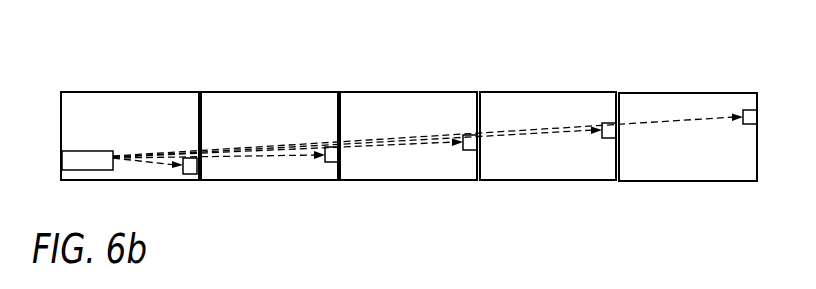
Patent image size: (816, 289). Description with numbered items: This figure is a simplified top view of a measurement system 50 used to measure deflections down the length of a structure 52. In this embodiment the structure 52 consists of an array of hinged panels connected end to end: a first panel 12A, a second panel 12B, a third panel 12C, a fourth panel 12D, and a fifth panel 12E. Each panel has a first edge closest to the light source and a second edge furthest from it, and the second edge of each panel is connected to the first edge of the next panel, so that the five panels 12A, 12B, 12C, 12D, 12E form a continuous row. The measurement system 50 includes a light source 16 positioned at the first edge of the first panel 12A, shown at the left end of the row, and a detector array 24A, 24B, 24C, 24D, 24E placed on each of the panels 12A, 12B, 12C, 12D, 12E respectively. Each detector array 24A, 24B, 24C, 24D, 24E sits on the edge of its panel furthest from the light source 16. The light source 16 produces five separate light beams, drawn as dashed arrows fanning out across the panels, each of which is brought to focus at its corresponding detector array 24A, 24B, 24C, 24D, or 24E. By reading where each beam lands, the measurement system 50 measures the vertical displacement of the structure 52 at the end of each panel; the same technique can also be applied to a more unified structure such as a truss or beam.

The first panel 12A is at (130, 92).
The second panel 12B is at (270, 92).
The third panel 12C is at (431, 92).
The fourth panel 12D is at (561, 92).
The fifth panel 12E is at (703, 93).
The light source 16 is at (62, 162).
The detector array 24A is at (192, 175).
The detector array 24B is at (328, 163).
The detector array 24C is at (471, 151).
The detector array 24D is at (608, 139).
The detector array 24E is at (751, 125).
The measurement system 50 is at (723, 64).
The structure 52 is at (703, 190).